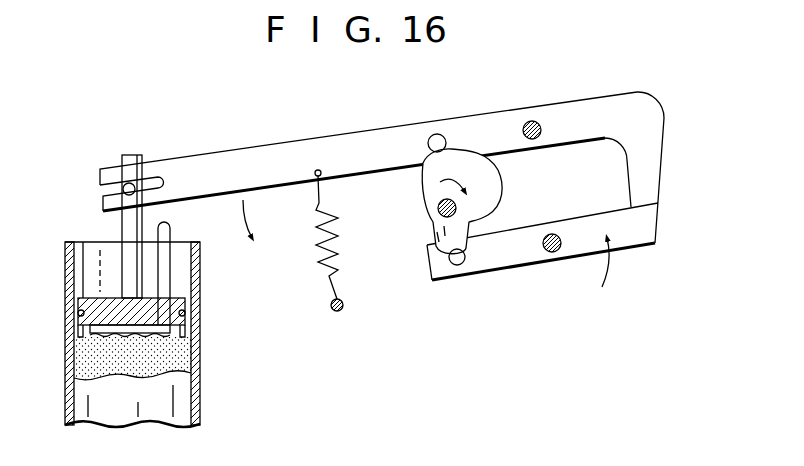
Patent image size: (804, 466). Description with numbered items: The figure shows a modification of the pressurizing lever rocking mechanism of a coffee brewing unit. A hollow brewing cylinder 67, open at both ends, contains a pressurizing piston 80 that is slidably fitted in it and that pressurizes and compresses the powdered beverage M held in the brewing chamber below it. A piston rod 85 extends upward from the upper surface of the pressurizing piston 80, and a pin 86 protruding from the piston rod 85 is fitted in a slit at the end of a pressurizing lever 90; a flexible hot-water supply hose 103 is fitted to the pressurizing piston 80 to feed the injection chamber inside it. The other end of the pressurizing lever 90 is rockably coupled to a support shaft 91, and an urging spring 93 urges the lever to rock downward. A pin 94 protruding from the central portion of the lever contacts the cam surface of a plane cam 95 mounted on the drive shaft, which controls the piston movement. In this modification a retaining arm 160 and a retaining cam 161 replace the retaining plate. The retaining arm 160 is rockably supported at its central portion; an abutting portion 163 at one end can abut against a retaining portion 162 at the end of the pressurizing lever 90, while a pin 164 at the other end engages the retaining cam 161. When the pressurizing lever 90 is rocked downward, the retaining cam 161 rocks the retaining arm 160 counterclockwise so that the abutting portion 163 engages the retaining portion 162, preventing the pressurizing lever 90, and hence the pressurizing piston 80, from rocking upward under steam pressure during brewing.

The brewing cylinder 67 is at (200, 354).
The powdered beverage M is at (74, 366).
The pressurizing piston 80 is at (78, 326).
The piston rod 85 is at (120, 236).
The pin 86 is at (126, 184).
The hot-water supply hose 103 is at (170, 232).
The pressurizing lever 90 is at (372, 142).
The support shaft 91 is at (533, 120).
The urging spring 93 is at (318, 245).
The pin 94 is at (438, 134).
The plane cam 95 is at (424, 178).
The retaining arm 160 is at (518, 260).
The retaining cam 161 is at (433, 230).
The retaining portion 162 is at (650, 166).
The abutting portion 163 is at (623, 207).
The pin 164 is at (458, 266).